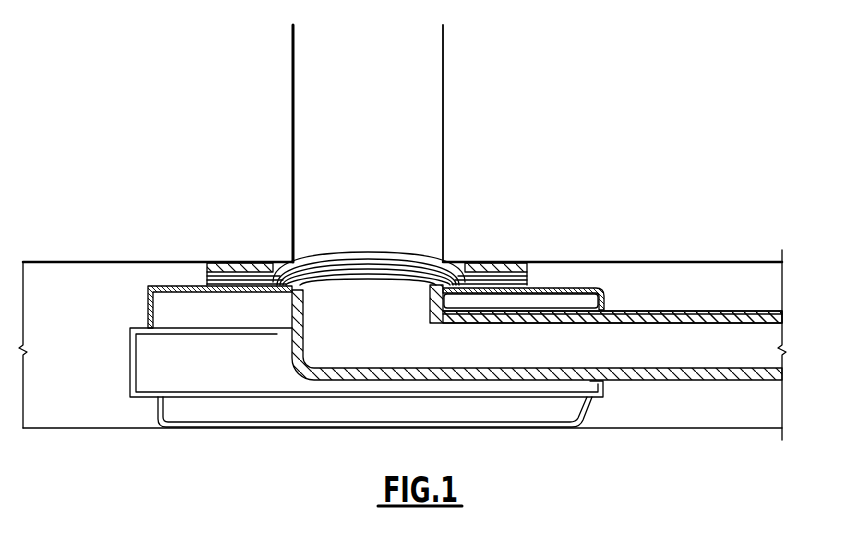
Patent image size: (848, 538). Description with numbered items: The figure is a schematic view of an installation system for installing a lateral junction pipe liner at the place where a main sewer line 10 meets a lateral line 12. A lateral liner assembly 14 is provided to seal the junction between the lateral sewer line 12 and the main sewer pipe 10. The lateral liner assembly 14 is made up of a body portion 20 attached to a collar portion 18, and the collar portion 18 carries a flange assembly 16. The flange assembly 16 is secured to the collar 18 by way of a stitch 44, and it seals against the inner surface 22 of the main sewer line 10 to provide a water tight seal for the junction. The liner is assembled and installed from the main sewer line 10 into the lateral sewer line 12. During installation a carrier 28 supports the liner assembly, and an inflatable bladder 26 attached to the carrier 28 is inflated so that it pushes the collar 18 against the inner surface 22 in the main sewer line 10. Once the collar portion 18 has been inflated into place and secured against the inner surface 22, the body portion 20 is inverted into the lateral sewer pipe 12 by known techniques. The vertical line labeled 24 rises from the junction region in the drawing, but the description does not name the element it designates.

The main sewer line 10 is at (683, 278).
The lateral line 12 is at (443, 98).
The lateral liner assembly 14 is at (622, 302).
The flange assembly 16 is at (540, 270).
The collar portion 18 is at (562, 292).
The body portion 20 is at (697, 312).
The inner surface 22 is at (652, 268).
The interconnect post 24 is at (298, 171).
The inflatable bladder 26 is at (180, 294).
The carrier 28 is at (203, 333).
The stitch 44 is at (490, 286).